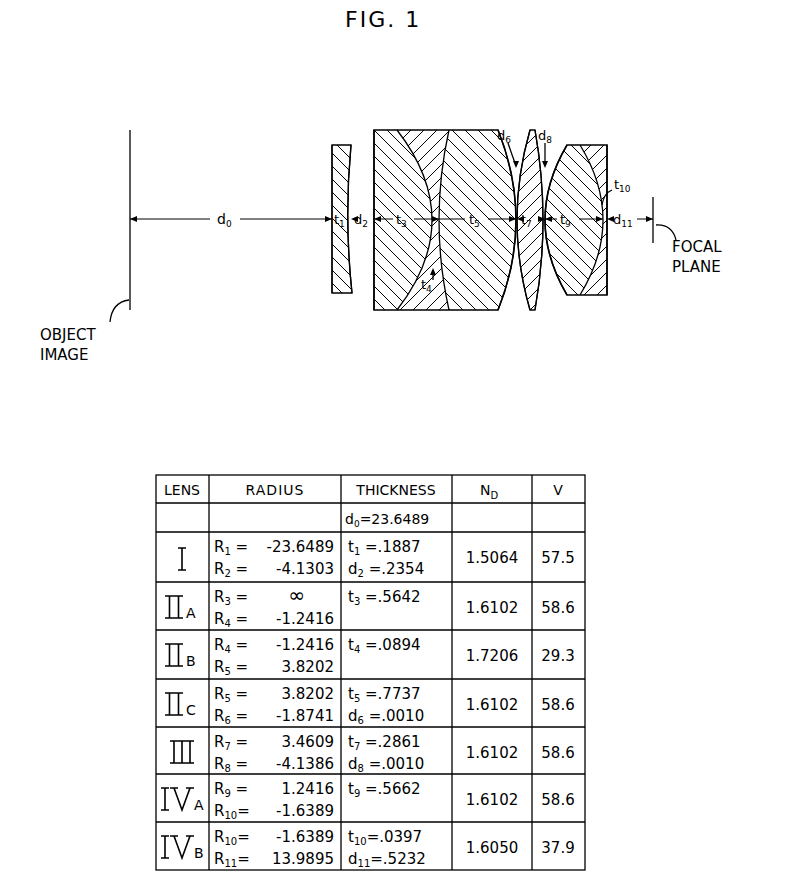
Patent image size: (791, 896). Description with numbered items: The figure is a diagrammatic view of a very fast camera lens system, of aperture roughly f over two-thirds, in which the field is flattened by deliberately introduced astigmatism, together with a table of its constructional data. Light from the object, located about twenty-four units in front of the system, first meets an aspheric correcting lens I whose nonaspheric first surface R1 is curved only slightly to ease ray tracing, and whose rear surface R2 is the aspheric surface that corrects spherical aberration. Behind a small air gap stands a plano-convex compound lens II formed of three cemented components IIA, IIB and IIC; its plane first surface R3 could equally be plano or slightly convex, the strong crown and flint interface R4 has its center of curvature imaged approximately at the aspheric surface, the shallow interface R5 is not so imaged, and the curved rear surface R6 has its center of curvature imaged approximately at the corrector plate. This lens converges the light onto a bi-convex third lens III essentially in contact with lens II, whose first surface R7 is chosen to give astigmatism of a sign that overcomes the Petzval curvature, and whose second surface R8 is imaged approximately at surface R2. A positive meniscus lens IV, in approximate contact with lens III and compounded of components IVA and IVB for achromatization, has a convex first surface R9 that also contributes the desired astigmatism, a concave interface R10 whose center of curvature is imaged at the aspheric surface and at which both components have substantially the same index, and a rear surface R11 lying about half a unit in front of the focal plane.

The aspheric correcting lens I is at (341, 143).
The plano-convex compound lens II is at (498, 124).
The lens element IIA is at (378, 330).
The lens element IIB is at (436, 330).
The lens element IIC is at (488, 330).
The third lens III is at (533, 140).
The positive meniscus lens IV is at (562, 124).
The lens element IVA is at (575, 288).
The lens element IVB is at (604, 268).
The first surface of lens I R1 is at (332, 290).
The aspheric surface R2 is at (350, 291).
The first surface of lens II R3 is at (374, 310).
The strong crown and flint interface R4 is at (398, 310).
The shallow crown and flint interface R5 is at (449, 310).
The curved surface of lens II R6 is at (500, 310).
The first surface of lens III R7 is at (521, 300).
The second surface of lens III R8 is at (538, 300).
The convex first surface of lens IV R9 is at (567, 296).
The second surface of lens IV R10 is at (583, 295).
The rear surface of lens IV R11 is at (606, 292).